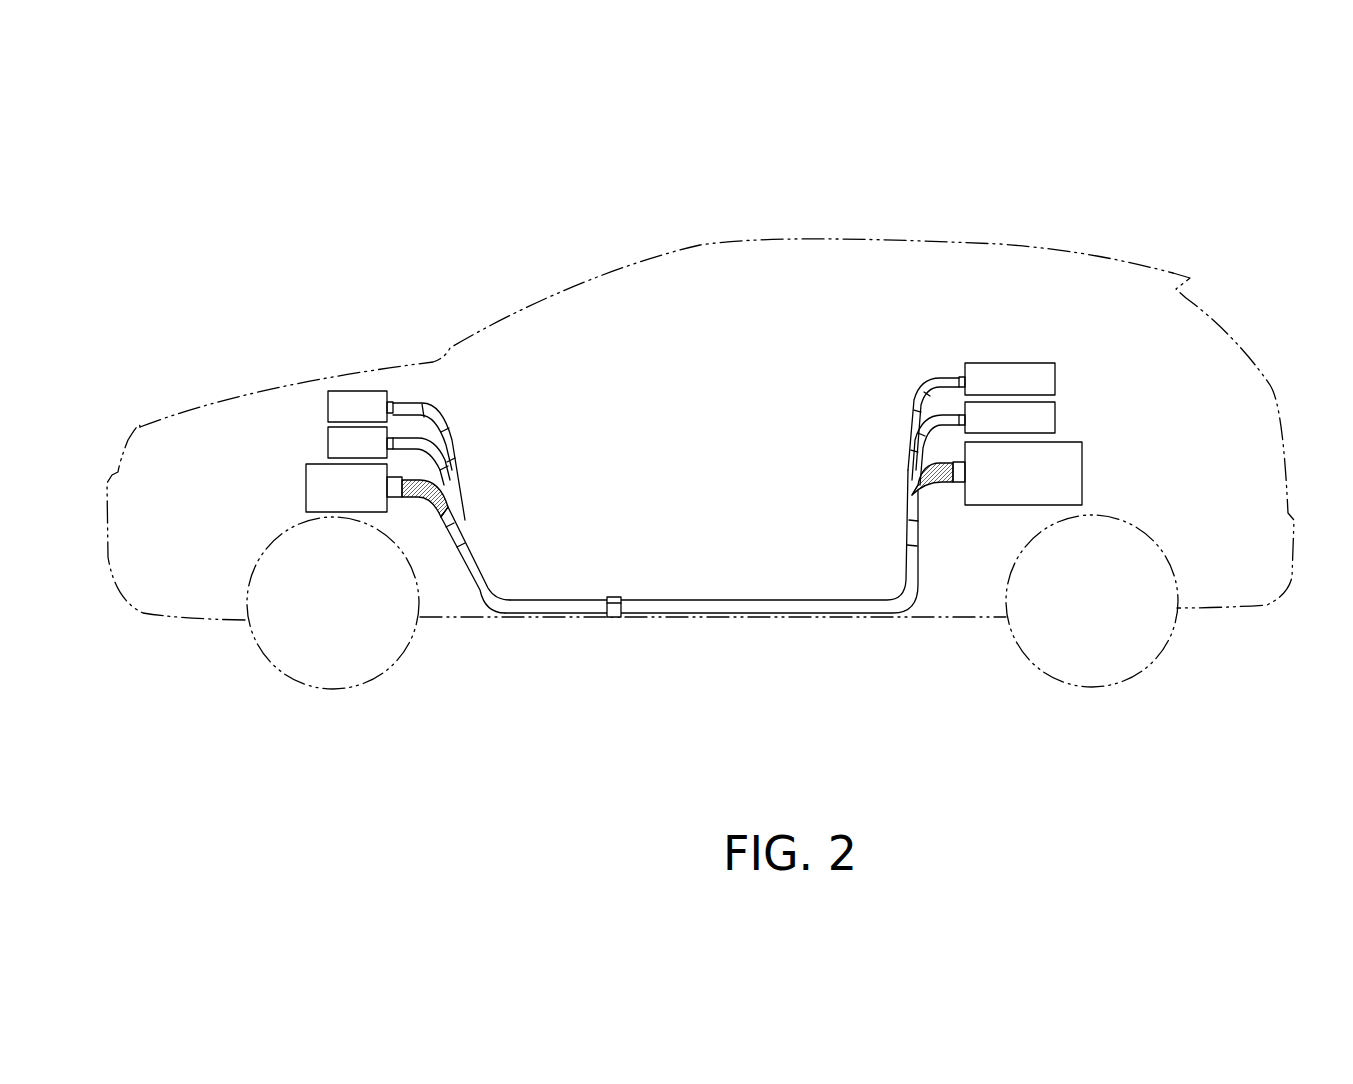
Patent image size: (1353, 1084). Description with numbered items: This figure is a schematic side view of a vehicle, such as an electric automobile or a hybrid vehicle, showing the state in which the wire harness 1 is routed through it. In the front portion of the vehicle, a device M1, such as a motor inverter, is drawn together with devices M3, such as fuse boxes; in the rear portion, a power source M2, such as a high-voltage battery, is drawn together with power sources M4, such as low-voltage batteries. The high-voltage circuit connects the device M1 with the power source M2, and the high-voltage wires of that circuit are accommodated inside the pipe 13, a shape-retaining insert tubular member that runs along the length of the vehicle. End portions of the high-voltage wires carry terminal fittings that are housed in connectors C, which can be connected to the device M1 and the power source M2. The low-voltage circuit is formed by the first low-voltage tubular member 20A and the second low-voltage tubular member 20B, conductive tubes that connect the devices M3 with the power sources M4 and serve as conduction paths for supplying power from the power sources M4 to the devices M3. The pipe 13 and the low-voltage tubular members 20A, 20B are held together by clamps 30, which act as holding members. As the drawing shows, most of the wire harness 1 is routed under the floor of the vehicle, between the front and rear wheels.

The wire harness 1 is at (742, 535).
The device M1 is at (313, 490).
The devices M3 is at (333, 442).
The power source M2 is at (1075, 470).
The power sources M4 is at (1022, 370).
The first low-voltage tubular member 20A is at (443, 442).
The second low-voltage tubular member 20B is at (447, 473).
The connector C is at (393, 490).
The clamp 30 is at (613, 607).
The pipe 13 is at (759, 603).